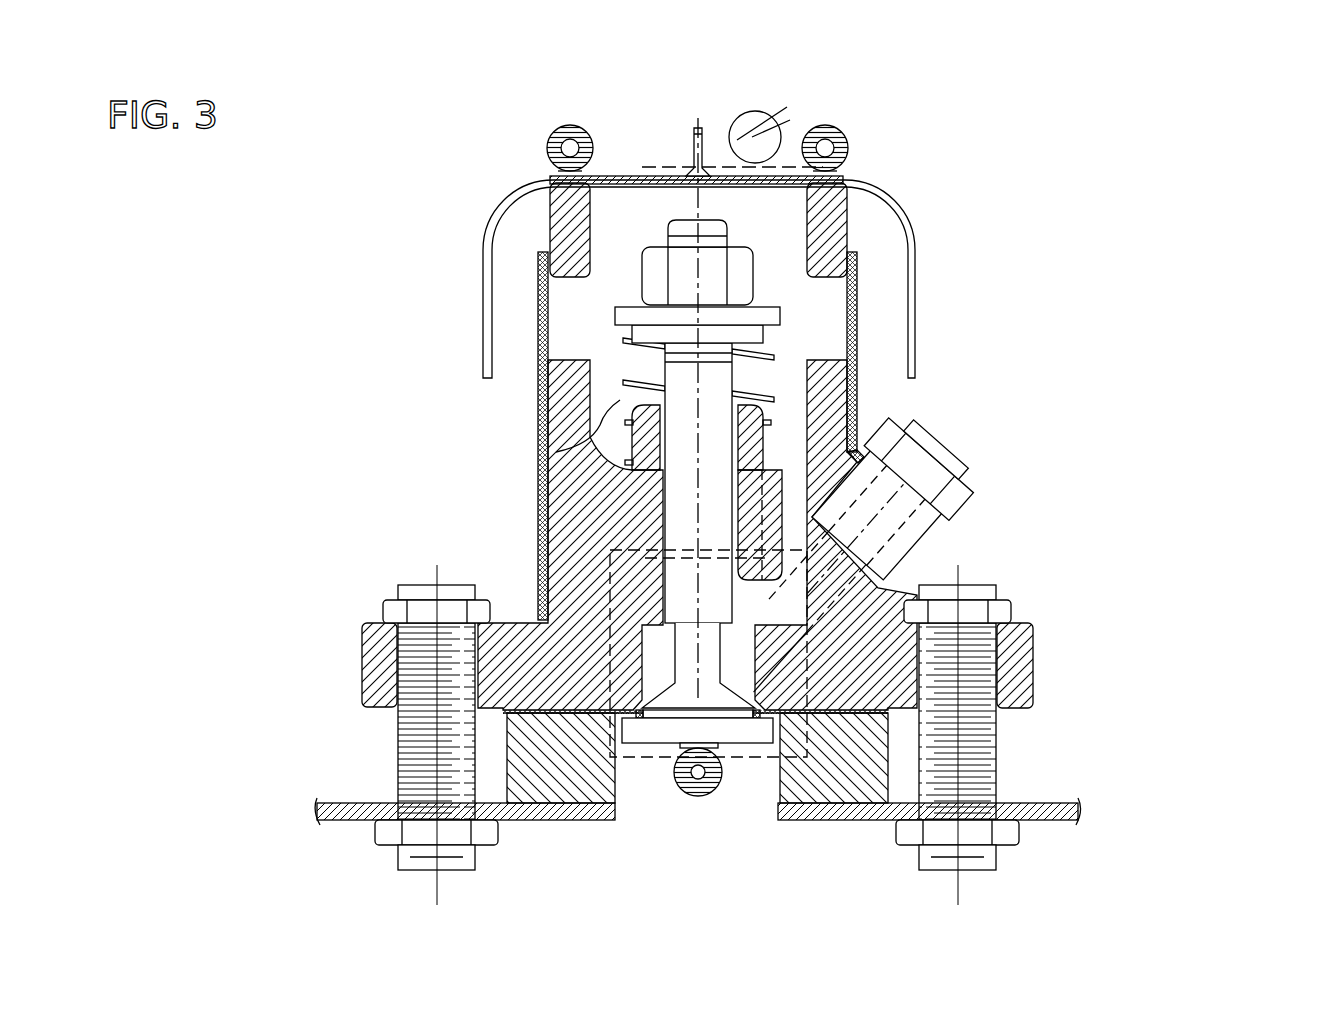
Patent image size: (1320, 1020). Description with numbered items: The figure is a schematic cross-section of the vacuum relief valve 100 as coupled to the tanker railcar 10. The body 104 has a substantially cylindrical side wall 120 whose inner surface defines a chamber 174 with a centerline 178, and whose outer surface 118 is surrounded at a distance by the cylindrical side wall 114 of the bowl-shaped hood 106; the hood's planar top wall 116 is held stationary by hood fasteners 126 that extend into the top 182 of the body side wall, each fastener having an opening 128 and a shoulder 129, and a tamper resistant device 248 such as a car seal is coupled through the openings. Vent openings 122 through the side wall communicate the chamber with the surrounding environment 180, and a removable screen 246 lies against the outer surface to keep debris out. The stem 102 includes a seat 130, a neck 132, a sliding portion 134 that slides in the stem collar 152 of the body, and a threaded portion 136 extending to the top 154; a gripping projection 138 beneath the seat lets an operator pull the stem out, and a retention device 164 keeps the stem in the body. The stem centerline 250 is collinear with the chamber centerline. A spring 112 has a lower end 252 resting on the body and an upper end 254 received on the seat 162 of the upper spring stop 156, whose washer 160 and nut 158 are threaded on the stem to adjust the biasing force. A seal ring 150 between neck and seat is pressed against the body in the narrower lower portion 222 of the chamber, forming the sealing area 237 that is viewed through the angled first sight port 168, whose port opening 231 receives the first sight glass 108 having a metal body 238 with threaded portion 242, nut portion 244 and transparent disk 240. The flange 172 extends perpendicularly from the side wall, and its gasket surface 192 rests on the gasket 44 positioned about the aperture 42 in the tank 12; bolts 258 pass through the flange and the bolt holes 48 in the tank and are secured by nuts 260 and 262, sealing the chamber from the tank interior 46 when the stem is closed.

The tanker railcar 10 is at (1172, 322).
The tank 12 is at (1055, 790).
The aperture 42 is at (670, 832).
The gasket 44 is at (857, 793).
The interior 46 is at (524, 913).
The bolt hole 48 is at (395, 803).
The vacuum relief valve 100 is at (1068, 248).
The stem 102 is at (768, 253).
The body 104 is at (913, 405).
The hood 106 is at (917, 348).
The first sight glass 108 is at (965, 528).
The spring 112 is at (556, 452).
The side wall 114 is at (483, 305).
The top wall 116 is at (608, 174).
The outer surface 118 is at (545, 520).
The side wall 120 is at (568, 420).
The vent opening 122 is at (570, 307).
The hood fastener 126 is at (842, 128).
The opening 128 is at (822, 160).
The shoulder 129 is at (783, 140).
The seat 130 is at (650, 735).
The neck 132 is at (713, 664).
The sliding portion 134 is at (725, 618).
The threaded portion 136 is at (722, 232).
The gripping projection 138 is at (698, 795).
The seal ring 150 is at (758, 730).
The stem collar 152 is at (776, 456).
The top 154 is at (710, 218).
The upper spring stop 156 is at (792, 307).
The nut 158 is at (650, 270).
The washer 160 is at (623, 313).
The seat 162 is at (613, 340).
The retention device 164 is at (612, 472).
The first sight port 168 is at (823, 587).
The flange 172 is at (1023, 650).
The chamber 174 is at (772, 290).
The centerline 178 is at (542, 537).
The surrounding environment 180 is at (1182, 461).
The top 182 is at (552, 178).
The gasket surface 192 is at (757, 718).
The lower portion 222 is at (660, 660).
The port opening 231 is at (917, 680).
The sealing area 237 is at (598, 823).
The metal body 238 is at (973, 504).
The transparent disk 240 is at (935, 483).
The threaded portion 242 is at (950, 450).
The nut portion 244 is at (942, 456).
The screen 246 is at (858, 338).
The tamper resistant device 248 is at (648, 148).
The centerline 250 is at (722, 790).
The lower end 252 is at (617, 468).
The upper end 254 is at (542, 387).
The bolt 258 is at (405, 735).
The nut 260 is at (385, 612).
The nut 262 is at (388, 835).